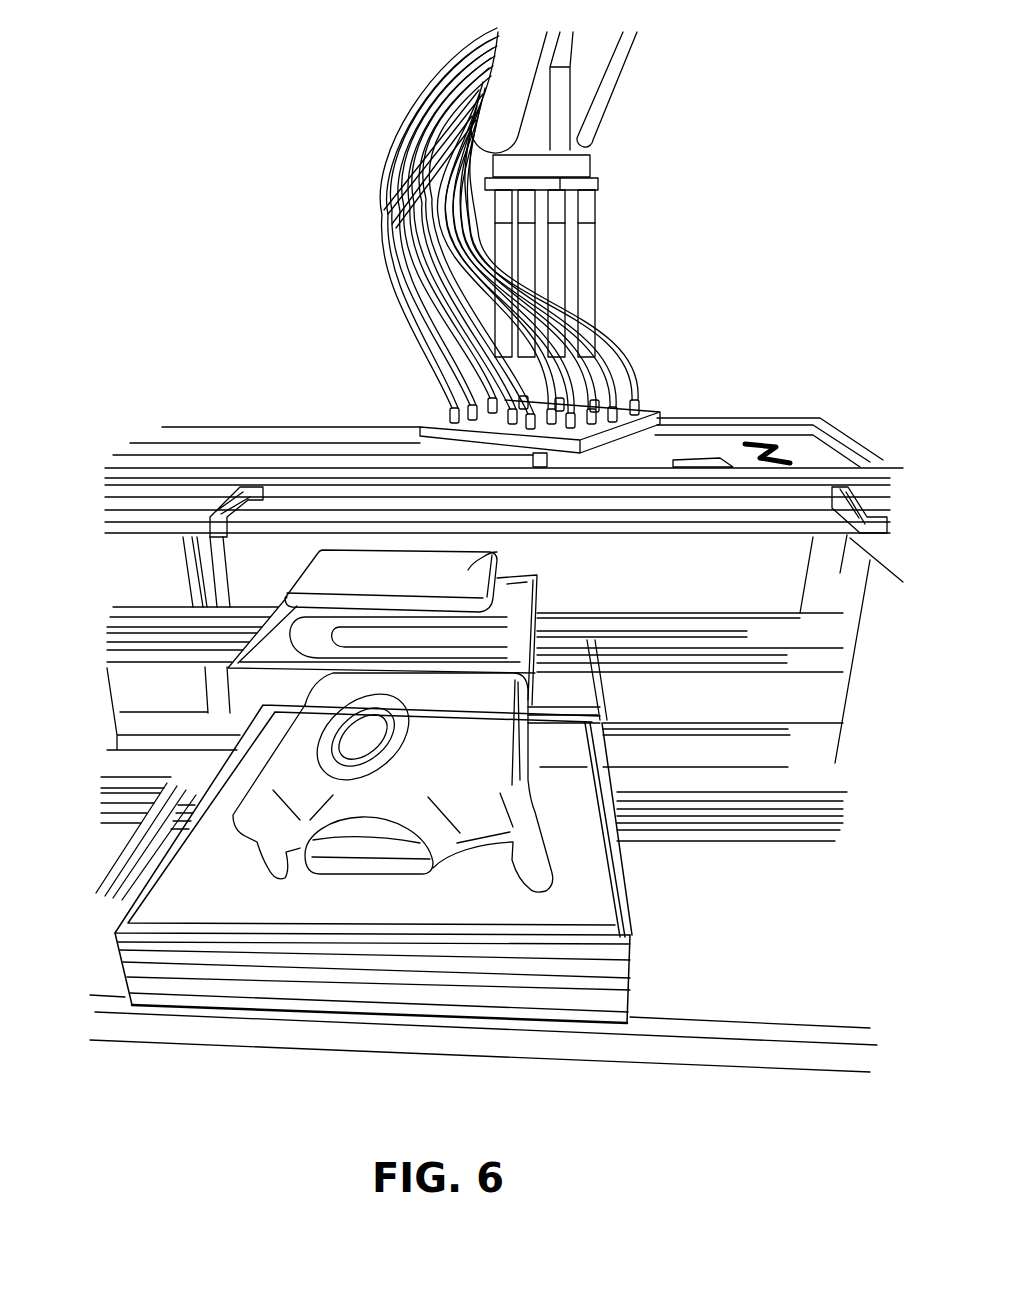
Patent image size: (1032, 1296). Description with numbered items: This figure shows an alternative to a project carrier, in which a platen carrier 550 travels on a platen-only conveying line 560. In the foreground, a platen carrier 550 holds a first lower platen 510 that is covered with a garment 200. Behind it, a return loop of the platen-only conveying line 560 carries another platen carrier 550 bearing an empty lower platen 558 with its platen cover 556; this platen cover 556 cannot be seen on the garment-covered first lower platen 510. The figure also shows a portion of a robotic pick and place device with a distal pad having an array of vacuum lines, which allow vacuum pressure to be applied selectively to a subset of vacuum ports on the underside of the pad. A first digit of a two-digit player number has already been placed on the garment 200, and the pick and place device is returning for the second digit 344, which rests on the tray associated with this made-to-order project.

The garment 200 is at (475, 812).
The second digit 344 is at (774, 442).
The first lower platen 510 is at (383, 843).
The platen carrier 550 is at (240, 652).
The platen cover 556 is at (497, 552).
The empty lower platen 558 is at (322, 577).
The platen-only conveying line 560 is at (787, 652).